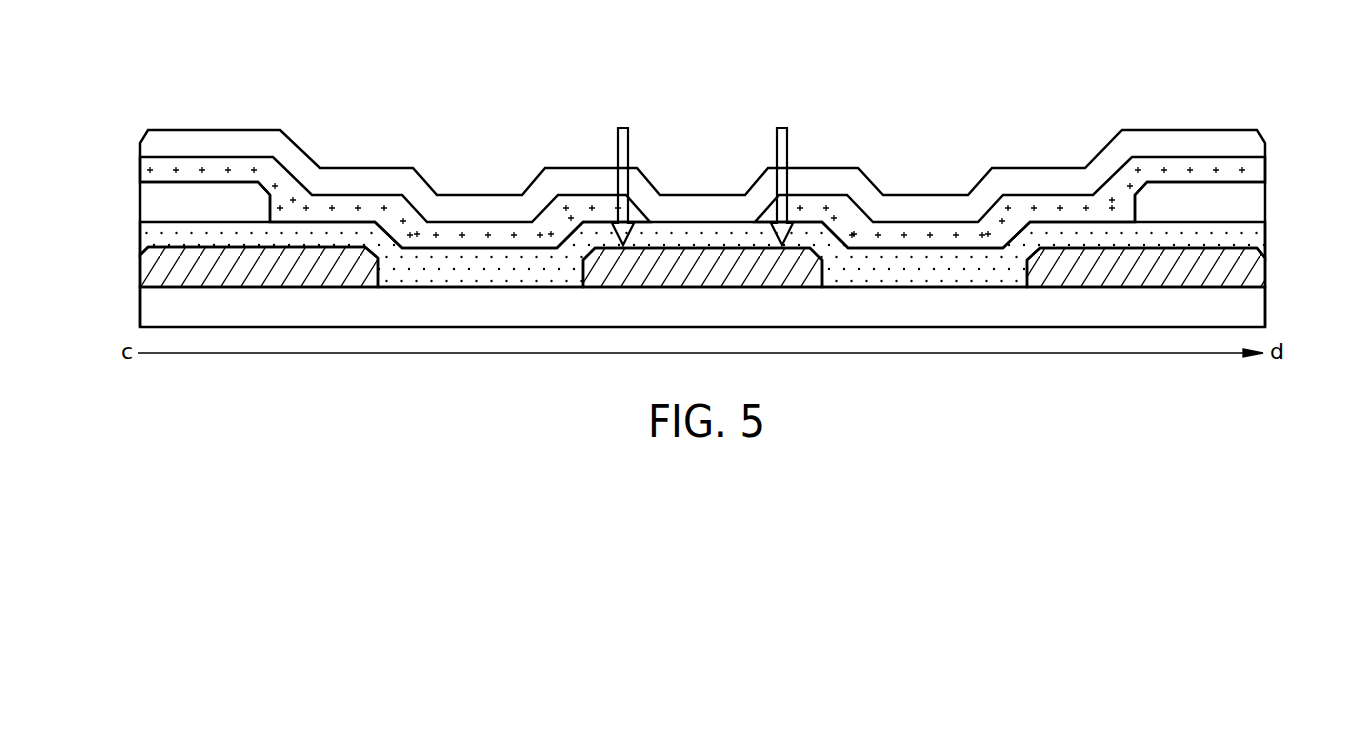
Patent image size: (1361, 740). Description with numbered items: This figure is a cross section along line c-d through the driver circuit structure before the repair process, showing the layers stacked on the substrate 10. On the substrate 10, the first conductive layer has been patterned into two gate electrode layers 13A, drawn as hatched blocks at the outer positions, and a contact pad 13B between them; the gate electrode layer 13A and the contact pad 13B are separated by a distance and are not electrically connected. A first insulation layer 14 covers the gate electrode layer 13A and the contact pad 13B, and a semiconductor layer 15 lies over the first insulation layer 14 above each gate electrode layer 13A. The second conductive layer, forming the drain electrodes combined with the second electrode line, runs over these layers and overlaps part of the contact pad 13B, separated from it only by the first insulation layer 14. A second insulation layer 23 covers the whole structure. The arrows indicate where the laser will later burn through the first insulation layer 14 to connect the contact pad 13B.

The substrate 10 is at (1267, 300).
The gate electrode layer 13A is at (331, 247).
The contact pad 13B is at (699, 245).
The first insulation layer 14 is at (140, 233).
The semiconductor layer 15 is at (140, 198).
The second insulation layer 23 is at (818, 167).